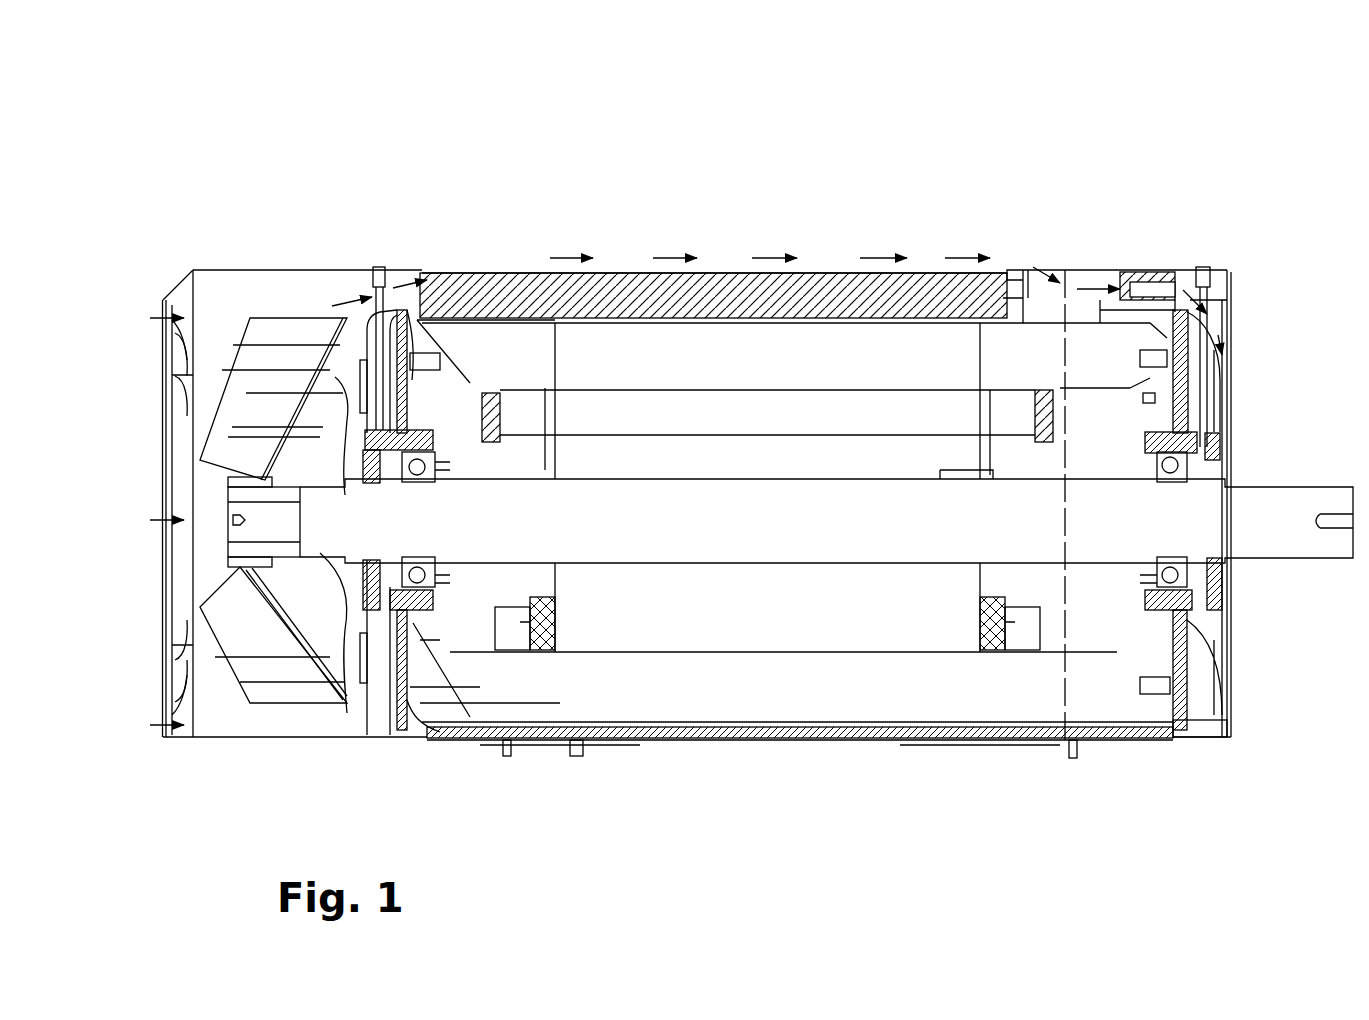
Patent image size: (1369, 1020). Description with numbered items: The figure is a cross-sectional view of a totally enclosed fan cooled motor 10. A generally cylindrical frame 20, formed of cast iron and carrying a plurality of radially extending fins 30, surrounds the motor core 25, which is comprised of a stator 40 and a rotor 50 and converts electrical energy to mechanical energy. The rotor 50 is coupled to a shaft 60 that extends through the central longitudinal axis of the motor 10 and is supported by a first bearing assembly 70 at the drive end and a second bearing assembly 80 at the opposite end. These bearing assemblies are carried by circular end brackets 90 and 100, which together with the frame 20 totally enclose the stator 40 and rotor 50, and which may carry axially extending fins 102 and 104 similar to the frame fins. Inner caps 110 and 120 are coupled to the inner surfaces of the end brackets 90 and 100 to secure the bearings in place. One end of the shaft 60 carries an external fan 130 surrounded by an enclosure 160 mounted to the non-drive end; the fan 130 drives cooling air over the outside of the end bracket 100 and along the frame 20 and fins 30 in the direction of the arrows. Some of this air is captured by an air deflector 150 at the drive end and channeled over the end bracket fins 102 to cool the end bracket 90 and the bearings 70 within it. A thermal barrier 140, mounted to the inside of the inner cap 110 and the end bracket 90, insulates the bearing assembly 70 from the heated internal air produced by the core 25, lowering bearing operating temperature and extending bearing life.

The TEFC motor 10 is at (295, 132).
The frame 20 is at (962, 737).
The motor core 25 is at (878, 348).
The radial extending fins 30 is at (707, 275).
The stator 40 is at (845, 683).
The rotor 50 is at (752, 617).
The shaft 60 is at (617, 535).
The first bearing assembly 70 is at (1197, 367).
The second bearing assembly 80 is at (425, 432).
The circular end bracket 90 is at (1229, 403).
The circular end bracket 100 is at (418, 640).
The end bracket fins 102 is at (1213, 700).
The end bracket fins 104 is at (376, 710).
The inner cap 110 is at (1155, 325).
The inner cap 120 is at (440, 448).
The external fan 130 is at (290, 330).
The thermal barrier 140 is at (1147, 733).
The air deflector 150 is at (1220, 740).
The enclosure 160 is at (228, 273).